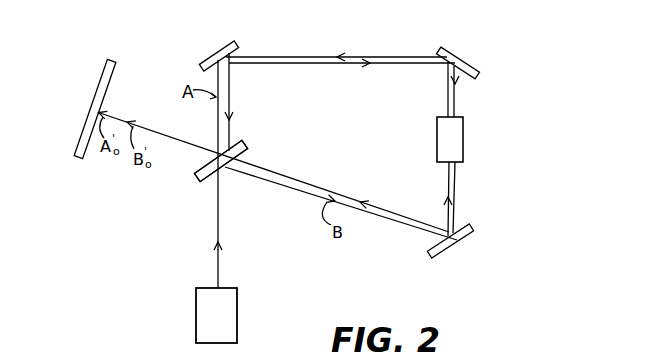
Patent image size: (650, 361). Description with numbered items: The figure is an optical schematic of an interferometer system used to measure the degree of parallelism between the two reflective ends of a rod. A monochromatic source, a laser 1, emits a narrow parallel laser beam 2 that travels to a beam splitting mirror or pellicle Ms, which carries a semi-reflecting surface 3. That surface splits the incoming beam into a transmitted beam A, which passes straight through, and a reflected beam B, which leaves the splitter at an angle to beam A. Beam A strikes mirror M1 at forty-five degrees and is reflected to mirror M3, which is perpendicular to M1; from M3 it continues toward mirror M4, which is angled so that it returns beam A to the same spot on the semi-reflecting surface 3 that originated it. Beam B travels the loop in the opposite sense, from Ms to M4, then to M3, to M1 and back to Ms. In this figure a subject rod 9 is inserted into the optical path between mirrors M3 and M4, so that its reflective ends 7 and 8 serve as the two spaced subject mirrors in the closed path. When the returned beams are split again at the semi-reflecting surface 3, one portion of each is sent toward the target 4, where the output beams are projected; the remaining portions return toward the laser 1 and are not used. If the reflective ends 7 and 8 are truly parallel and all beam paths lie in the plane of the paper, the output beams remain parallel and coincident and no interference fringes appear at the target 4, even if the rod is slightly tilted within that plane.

The laser 1 is at (237, 309).
The laser beam 2 is at (219, 220).
The semi-reflecting surface 3 is at (193, 185).
The target 4 is at (80, 162).
The reflective end 7 is at (447, 117).
The reflective end 8 is at (465, 165).
The subject rod 9 is at (463, 133).
The mirror M1 is at (224, 44).
The mirror M3 is at (470, 61).
The mirror M4 is at (454, 252).
The beam splitting mirror Ms is at (221, 171).